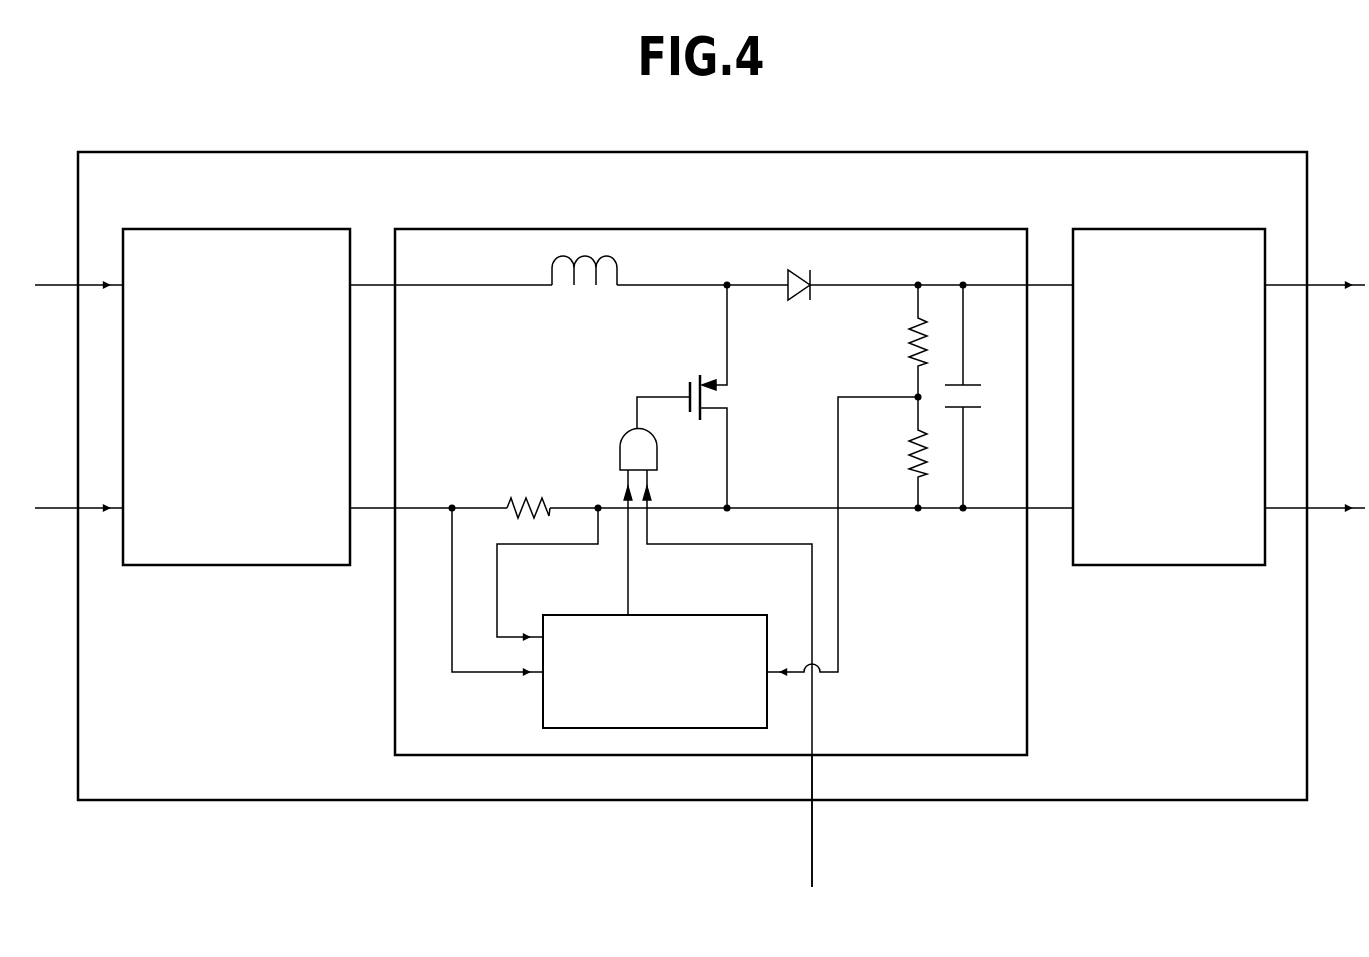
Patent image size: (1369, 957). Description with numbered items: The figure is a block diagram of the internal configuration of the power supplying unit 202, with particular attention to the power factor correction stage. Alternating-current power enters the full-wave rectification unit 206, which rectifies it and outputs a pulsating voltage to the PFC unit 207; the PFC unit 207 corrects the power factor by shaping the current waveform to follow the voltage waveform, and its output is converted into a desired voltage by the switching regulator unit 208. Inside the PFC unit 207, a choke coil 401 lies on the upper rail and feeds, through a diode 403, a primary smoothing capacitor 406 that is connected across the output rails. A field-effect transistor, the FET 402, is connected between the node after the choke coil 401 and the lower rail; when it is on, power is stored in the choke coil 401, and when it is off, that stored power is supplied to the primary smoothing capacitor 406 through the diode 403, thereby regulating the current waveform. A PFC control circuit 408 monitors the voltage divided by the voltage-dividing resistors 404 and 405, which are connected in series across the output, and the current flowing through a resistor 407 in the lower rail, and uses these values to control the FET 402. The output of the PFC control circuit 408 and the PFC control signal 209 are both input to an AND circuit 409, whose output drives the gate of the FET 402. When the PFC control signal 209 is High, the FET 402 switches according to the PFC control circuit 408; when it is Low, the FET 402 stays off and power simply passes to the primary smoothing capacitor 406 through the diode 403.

The power supplying unit 202 is at (1042, 152).
The full-wave rectification unit 206 is at (237, 229).
The PFC unit 207 is at (1028, 730).
The switching regulator unit 208 is at (1172, 229).
The PFC control signal 209 is at (812, 845).
The choke coil 401 is at (584, 289).
The field-effect transistor (FET) 402 is at (688, 390).
The diode 403 is at (812, 280).
The voltage-dividing resistor 404 is at (906, 348).
The voltage-dividing resistor 405 is at (906, 453).
The primary smoothing capacitor 406 is at (970, 380).
The resistor 407 is at (522, 496).
The PFC control circuit 408 is at (695, 614).
The AND circuit 409 is at (618, 448).